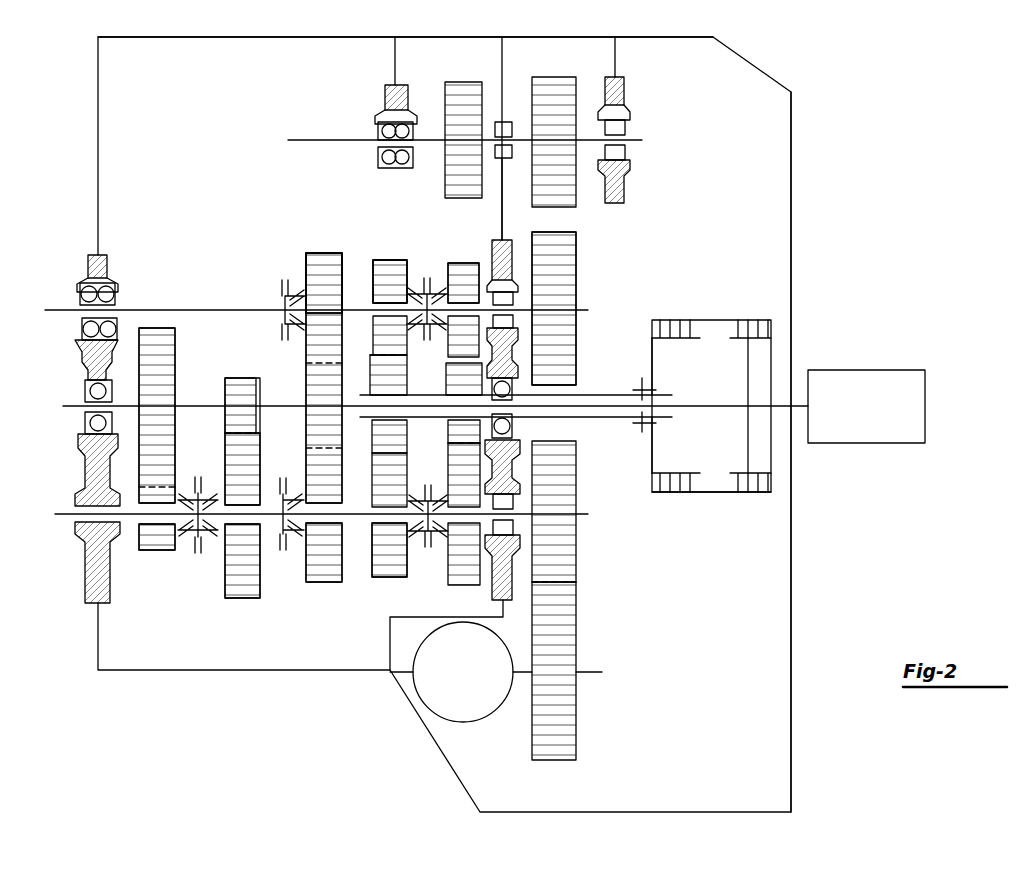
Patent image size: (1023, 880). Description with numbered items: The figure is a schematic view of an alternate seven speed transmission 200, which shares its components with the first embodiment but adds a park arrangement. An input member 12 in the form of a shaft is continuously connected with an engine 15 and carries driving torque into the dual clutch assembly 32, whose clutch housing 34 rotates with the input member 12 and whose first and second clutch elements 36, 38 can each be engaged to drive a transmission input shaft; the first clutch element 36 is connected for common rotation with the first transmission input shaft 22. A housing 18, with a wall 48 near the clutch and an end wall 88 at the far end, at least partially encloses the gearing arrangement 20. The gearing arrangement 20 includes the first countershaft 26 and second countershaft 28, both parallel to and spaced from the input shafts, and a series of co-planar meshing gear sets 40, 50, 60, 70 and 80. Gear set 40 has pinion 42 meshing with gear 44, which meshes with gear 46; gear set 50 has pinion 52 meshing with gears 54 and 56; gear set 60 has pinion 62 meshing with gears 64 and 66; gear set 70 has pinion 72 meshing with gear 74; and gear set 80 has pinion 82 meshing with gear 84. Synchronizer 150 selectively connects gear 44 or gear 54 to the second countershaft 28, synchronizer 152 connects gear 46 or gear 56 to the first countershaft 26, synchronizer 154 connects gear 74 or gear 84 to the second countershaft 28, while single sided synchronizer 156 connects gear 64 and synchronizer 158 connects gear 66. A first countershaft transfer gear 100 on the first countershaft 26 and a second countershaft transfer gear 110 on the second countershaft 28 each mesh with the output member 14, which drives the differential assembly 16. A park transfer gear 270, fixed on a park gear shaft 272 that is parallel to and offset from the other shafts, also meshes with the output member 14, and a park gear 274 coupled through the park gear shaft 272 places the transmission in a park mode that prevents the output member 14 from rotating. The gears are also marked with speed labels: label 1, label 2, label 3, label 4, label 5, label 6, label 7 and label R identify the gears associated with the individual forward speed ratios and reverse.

The input member 12 is at (800, 405).
The output member 14 is at (552, 760).
The engine 15 is at (866, 406).
The differential assembly 16 is at (463, 672).
The housing 18 is at (752, 63).
The gearing arrangement 20 is at (148, 118).
The first transmission input shaft 22 is at (185, 308).
The first countershaft 26 is at (586, 310).
The second countershaft 28 is at (618, 395).
The dual clutch assembly 32 is at (712, 306).
The clutch housing 34 is at (712, 494).
The first clutch element 36 is at (745, 390).
The second clutch element 38 is at (655, 362).
The co-planar gear set 40 is at (452, 262).
The pinion 42 is at (446, 426).
The gear 44 is at (448, 472).
The gear 46 is at (490, 240).
The wall 48 is at (505, 240).
The co-planar gear set 50 is at (378, 257).
The pinion 52 is at (407, 372).
The gear 54 is at (378, 578).
The gear 56 is at (400, 260).
The co-planar gear set 60 is at (312, 250).
The pinion 62 is at (306, 372).
The gear 64 is at (316, 582).
The gear 66 is at (335, 253).
The co-planar gear set 70 is at (228, 372).
The pinion 72 is at (245, 378).
The gear 74 is at (232, 600).
The co-planar gear set 80 is at (142, 322).
The pinion 82 is at (158, 328).
The gear 84 is at (146, 552).
The end wall 88 is at (88, 265).
The first countershaft transfer gear 100 is at (576, 240).
The second countershaft transfer gear 110 is at (576, 449).
The synchronizer 150 is at (437, 550).
The synchronizer 152 is at (428, 278).
The synchronizer 154 is at (214, 555).
The synchronizer 156 is at (290, 553).
The synchronizer 158 is at (285, 280).
The transmission 200 is at (797, 130).
The park transfer gear 270 is at (548, 77).
The park gear shaft 272 is at (328, 140).
The park gear 274 is at (462, 82).
The first gear ratio 1 is at (242, 575).
The second gear ratio 2 is at (464, 568).
The third gear ratio 3 is at (324, 271).
The fourth gear ratio 4 is at (390, 267).
The fifth gear ratio 5 is at (324, 566).
The sixth gear ratio 6 is at (389, 565).
The seventh gear ratio 7 is at (148, 551).
The reverse gear ratio R is at (463, 268).